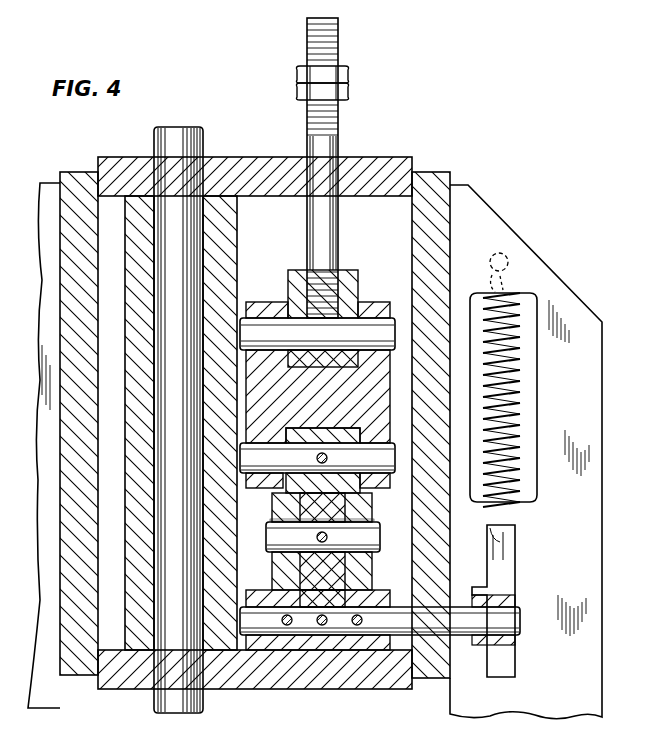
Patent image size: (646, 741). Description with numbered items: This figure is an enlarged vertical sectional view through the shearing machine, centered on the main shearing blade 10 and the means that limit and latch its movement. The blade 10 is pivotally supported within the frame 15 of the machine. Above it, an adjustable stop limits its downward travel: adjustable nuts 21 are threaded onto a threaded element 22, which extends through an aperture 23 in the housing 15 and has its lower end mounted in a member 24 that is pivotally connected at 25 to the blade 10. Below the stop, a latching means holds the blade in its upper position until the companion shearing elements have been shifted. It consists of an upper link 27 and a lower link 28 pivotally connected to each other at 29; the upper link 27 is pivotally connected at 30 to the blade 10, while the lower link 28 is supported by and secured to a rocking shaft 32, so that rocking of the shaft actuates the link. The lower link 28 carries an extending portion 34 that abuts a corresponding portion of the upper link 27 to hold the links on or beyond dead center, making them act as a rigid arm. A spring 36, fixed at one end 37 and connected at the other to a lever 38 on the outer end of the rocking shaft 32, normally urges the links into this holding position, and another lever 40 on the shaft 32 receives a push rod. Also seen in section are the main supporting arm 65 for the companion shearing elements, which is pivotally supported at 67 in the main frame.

The main shearing blade 10 is at (376, 312).
The frame 15 is at (120, 165).
The adjustable nuts 21 is at (350, 92).
The threaded element 22 is at (338, 35).
The aperture 23 is at (338, 172).
The member 24 is at (350, 272).
The pivotal connection 25 is at (264, 330).
The upper link 27 is at (276, 512).
The lower link 28 is at (286, 650).
The pivotal connection 29 is at (376, 540).
The pivotal connection 30 is at (264, 462).
The rocking shaft 32 is at (520, 622).
The extending portion 34 is at (305, 530).
The spring 36 is at (520, 375).
The fixed end 37 is at (506, 254).
The lever 38 is at (505, 575).
The lever 40 is at (320, 650).
The main supporting arm 65 is at (135, 678).
The pivot 67 is at (203, 135).